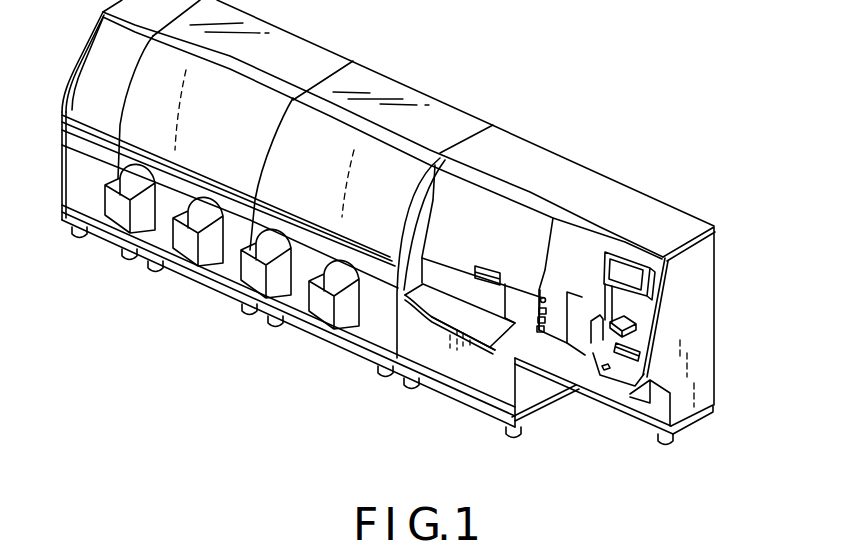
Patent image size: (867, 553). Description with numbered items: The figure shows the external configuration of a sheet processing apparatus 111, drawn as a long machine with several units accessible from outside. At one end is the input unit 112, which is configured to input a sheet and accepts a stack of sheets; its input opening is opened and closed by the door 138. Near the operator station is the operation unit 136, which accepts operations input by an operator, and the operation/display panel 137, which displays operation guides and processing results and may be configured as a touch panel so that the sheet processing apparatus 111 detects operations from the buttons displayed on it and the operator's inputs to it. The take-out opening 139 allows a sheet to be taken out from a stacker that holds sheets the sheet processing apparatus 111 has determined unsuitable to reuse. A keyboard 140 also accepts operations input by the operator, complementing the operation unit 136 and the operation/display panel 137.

The sheet processing apparatus 111 is at (565, 95).
The input unit 112 is at (612, 253).
The operation unit 136 is at (549, 365).
The operation/display panel 137 is at (650, 285).
The door 138 is at (586, 348).
The take-out opening 139 is at (630, 324).
The keyboard 140 is at (602, 376).